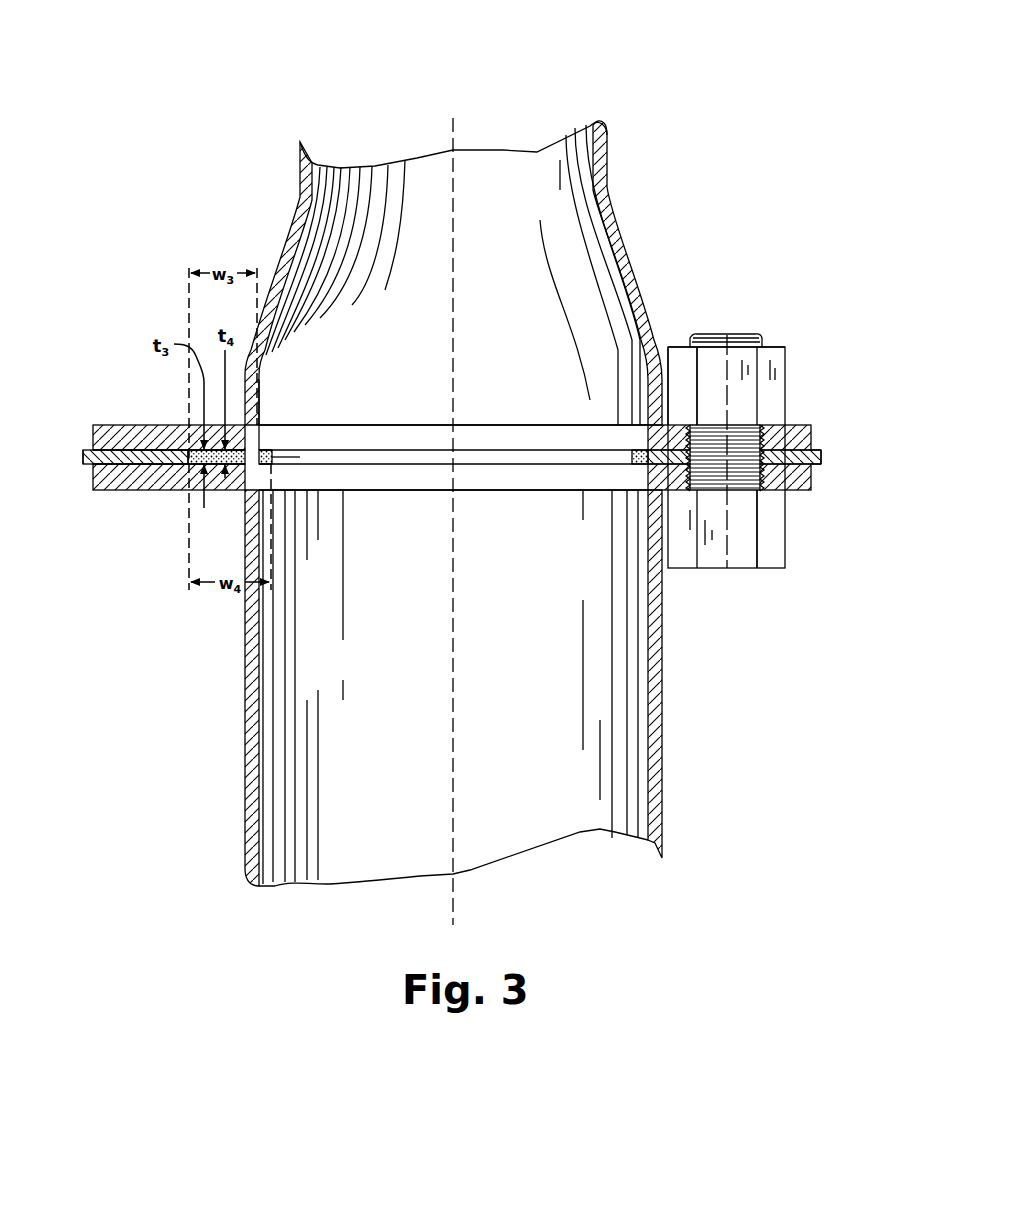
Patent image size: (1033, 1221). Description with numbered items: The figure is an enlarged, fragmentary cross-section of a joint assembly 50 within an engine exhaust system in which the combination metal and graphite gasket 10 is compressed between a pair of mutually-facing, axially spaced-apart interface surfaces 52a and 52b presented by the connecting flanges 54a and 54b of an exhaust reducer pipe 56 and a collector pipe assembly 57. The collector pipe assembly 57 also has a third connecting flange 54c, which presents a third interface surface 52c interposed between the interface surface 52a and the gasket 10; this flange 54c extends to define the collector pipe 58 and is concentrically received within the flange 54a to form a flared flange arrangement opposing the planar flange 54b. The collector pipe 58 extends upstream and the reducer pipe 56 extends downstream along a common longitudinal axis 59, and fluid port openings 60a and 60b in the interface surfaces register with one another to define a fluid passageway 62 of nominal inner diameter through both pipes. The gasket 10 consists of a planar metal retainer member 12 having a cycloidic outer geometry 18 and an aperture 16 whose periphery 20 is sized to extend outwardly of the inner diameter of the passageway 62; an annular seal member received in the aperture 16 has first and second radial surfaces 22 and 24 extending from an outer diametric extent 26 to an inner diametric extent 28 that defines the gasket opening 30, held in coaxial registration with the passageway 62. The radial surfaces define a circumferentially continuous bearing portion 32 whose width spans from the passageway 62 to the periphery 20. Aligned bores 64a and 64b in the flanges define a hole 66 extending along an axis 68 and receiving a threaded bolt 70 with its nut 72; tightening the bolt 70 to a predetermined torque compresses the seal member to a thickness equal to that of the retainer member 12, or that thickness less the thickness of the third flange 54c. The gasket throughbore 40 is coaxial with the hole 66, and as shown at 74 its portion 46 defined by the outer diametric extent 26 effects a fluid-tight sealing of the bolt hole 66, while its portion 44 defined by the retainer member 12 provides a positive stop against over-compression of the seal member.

The gasket 10 is at (822, 459).
The retainer member 12 is at (812, 448).
The aperture 16 is at (262, 440).
The outer geometry 18 is at (88, 462).
The periphery 20 is at (202, 470).
The first radial surface 22 is at (196, 450).
The second radial surface 24 is at (226, 478).
The outer diametric extent 26 is at (196, 460).
The inner diametric extent 28 is at (278, 457).
The opening 30 is at (456, 465).
The bearing portion 32 is at (274, 451).
The throughbore 40 is at (708, 492).
The portion of throughbore 44 is at (746, 470).
The remainder of throughbore 46 is at (690, 443).
The joint assembly 50 is at (688, 68).
The interface surface 52a is at (146, 466).
The interface surface 52b is at (146, 448).
The third interface surface 52c is at (275, 463).
The connecting flange 54a is at (118, 482).
The connecting flange 54b is at (102, 425).
The third connecting flange 54c is at (268, 467).
The exhaust reducer pipe 56 is at (609, 166).
The collector pipe assembly 57 is at (640, 469).
The collector pipe 58 is at (664, 777).
The longitudinal axis 59 is at (456, 134).
The fluid port opening 60a is at (510, 499).
The fluid port opening 60b is at (513, 419).
The fluid passageway 62 is at (466, 762).
The bore 64a is at (745, 485).
The bore 64b is at (748, 428).
The hole 66 is at (729, 494).
The axis 68 is at (727, 330).
The threaded bolt 70 is at (742, 335).
The nut 72 is at (788, 347).
The sealing location 74 is at (712, 432).